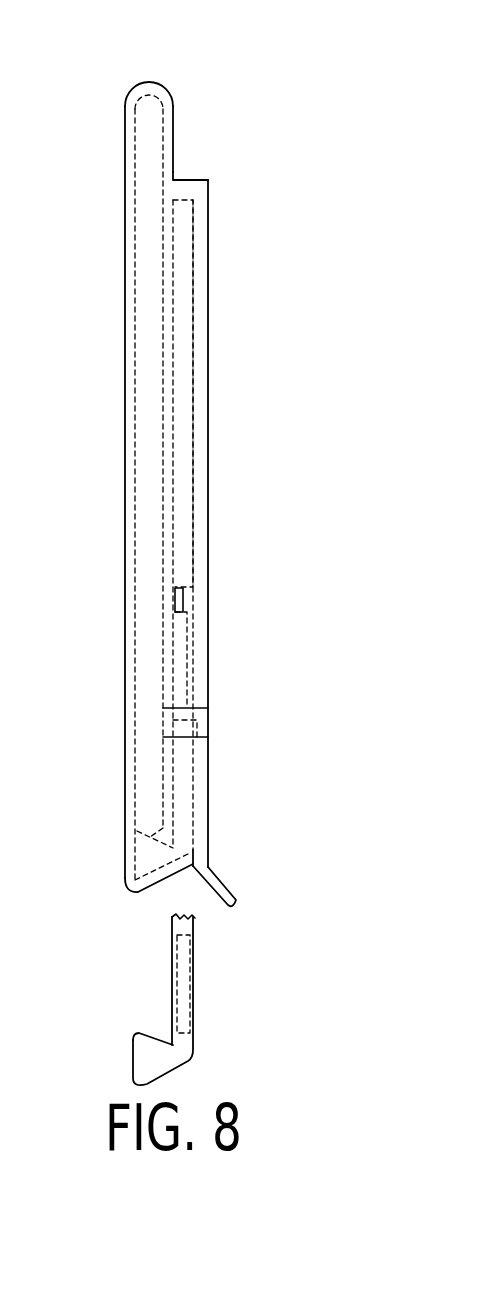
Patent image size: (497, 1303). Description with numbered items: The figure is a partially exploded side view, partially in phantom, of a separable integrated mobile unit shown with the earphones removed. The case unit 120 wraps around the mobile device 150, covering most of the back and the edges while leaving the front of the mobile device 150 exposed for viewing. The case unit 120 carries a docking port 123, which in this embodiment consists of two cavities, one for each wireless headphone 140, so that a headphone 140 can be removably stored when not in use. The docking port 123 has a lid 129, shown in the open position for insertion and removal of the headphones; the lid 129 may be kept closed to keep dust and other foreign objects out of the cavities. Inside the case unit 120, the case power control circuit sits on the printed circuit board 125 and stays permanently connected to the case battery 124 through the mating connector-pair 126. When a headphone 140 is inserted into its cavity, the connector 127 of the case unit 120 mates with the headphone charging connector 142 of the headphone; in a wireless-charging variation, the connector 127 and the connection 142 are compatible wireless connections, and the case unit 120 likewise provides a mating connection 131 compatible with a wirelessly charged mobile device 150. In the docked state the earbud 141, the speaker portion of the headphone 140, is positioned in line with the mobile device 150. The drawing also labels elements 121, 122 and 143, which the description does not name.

The case unit 120 is at (151, 80).
The thick side wall 121 is at (210, 394).
The thin side wall 122 is at (176, 145).
The docking port 123 is at (179, 830).
The case battery 124 is at (179, 503).
The printed circuit board 125 is at (183, 667).
The mating connector-pair 126 is at (185, 600).
The connector 127 is at (201, 722).
The lid 129 is at (237, 892).
The mating connection 131 is at (124, 113).
The wireless headphone 140 is at (195, 980).
The earbud 141 is at (148, 1056).
The headphone charging connector 142 is at (198, 918).
The inner slot 143 is at (195, 1015).
The mobile device 150 is at (167, 173).